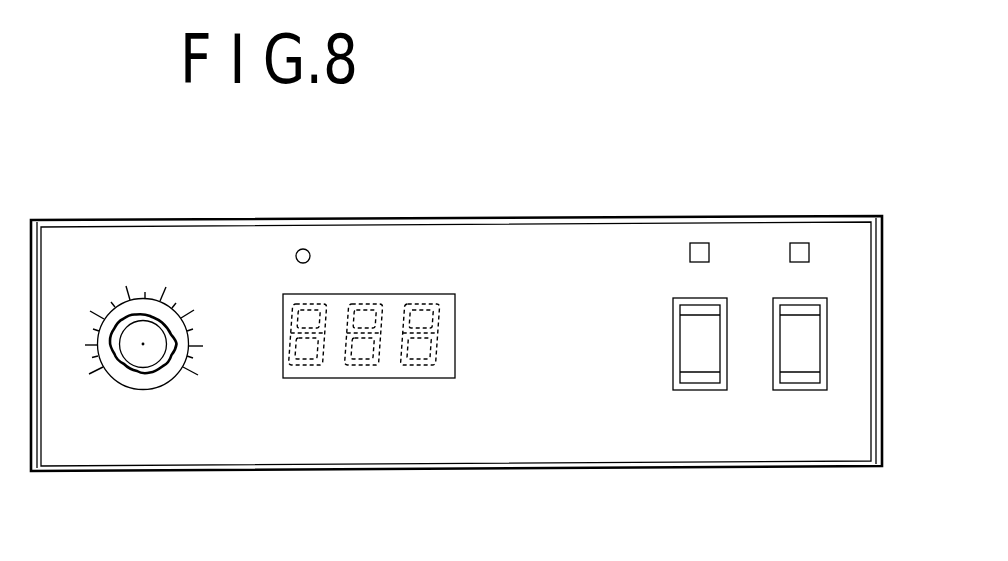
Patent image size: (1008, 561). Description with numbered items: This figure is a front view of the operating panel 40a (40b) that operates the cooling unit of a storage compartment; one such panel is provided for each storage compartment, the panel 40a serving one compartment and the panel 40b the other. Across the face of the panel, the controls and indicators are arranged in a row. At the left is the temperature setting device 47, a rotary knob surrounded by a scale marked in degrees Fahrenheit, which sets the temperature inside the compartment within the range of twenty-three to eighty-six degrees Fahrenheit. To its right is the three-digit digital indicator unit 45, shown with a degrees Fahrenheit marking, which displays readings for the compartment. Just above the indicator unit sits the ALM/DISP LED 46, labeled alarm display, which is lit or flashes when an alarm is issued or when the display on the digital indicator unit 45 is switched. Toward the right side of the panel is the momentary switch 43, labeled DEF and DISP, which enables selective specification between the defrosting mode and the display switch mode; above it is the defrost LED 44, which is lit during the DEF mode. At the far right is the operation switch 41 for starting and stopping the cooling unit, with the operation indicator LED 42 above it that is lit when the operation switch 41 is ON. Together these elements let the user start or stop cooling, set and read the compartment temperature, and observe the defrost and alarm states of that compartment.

The operating panel 40a is at (529, 212).
The operating panel 40b is at (456, 344).
The operation switch 41 is at (800, 365).
The operation indicator LED 42 is at (797, 243).
The momentary switch 43 is at (694, 340).
The defrost LED 44 is at (698, 243).
The 3-digit digital indicator unit 45 is at (388, 367).
The ALM/DISP LED 46 is at (303, 249).
The temperature setting device 47 is at (148, 353).